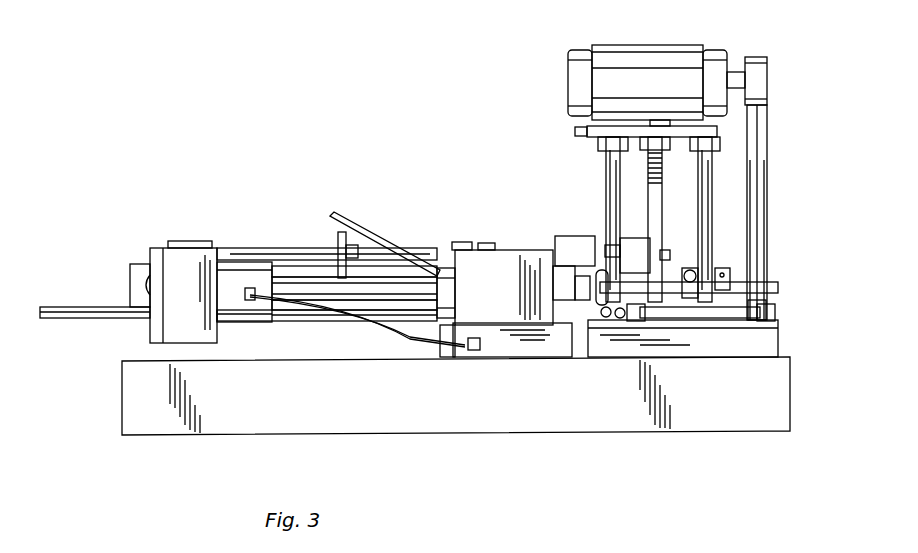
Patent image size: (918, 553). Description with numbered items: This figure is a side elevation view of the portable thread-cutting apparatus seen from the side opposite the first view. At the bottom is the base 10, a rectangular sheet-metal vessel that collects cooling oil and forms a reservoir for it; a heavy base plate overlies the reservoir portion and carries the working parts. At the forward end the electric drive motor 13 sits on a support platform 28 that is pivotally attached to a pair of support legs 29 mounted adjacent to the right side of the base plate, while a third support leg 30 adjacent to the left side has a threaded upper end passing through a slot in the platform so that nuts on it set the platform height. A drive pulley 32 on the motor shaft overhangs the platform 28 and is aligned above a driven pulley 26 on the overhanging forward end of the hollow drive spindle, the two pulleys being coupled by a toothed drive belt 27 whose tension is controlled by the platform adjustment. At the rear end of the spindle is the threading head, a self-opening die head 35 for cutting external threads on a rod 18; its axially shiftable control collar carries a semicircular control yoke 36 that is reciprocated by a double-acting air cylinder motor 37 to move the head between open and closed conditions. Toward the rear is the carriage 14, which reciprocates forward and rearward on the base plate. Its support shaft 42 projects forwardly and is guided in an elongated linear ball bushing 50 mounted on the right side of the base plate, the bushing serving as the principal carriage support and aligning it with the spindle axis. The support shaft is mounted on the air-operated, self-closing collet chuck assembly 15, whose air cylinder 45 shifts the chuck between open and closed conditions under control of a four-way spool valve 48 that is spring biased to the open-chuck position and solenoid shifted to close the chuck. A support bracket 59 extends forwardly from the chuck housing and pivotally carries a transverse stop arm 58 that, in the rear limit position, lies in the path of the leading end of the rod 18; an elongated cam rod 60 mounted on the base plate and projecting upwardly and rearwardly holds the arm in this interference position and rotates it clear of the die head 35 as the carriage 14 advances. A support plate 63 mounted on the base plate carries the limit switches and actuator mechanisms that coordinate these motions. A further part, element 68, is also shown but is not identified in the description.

The base 10 is at (382, 412).
The electric drive motor 13 is at (656, 93).
The carriage 14 is at (152, 245).
The collet chuck assembly 15 is at (197, 309).
The rod 18 is at (79, 306).
The driven pulley 26 is at (767, 242).
The toothed drive belt 27 is at (761, 152).
The support platform 28 is at (577, 132).
The support legs 29 is at (600, 170).
The third support leg 30 is at (660, 168).
The drive pulley 32 is at (768, 79).
The self-opening die head 35 is at (408, 329).
The control yoke 36 is at (463, 241).
The double-acting air cylinder motor 37 is at (555, 240).
The support shaft 42 is at (390, 286).
The air cylinder 45 is at (260, 315).
The four-way valve 48 is at (540, 344).
The linear ball bushing 50 is at (516, 303).
The transverse arm 58 is at (335, 233).
The support bracket 59 is at (240, 253).
The cam rod 60 is at (363, 229).
The support plate 63 is at (760, 341).
The lever arm 68 is at (786, 287).